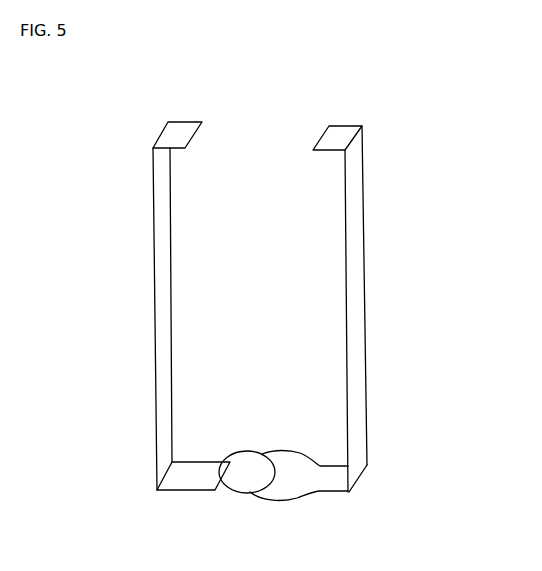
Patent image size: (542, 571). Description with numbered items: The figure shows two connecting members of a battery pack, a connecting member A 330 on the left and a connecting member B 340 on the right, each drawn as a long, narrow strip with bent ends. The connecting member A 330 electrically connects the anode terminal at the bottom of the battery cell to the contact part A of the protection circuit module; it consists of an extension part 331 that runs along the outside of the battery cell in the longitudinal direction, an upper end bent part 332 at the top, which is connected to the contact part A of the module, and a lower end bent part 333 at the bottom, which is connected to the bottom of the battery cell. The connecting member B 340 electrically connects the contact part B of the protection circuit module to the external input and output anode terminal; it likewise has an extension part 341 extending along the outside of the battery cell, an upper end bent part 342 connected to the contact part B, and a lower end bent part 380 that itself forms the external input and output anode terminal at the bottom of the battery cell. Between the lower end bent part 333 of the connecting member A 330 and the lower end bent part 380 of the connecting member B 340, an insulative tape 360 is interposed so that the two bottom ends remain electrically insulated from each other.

The connecting member A 330 is at (134, 322).
The extension part 331 is at (160, 259).
The upper end bent part 332 is at (176, 134).
The lower end bent part 333 is at (183, 473).
The connecting member B 340 is at (397, 292).
The extension part 341 is at (355, 278).
The upper end bent part 342 is at (345, 134).
The insulative tape 360 is at (245, 470).
The lower end bent part 380 is at (290, 482).